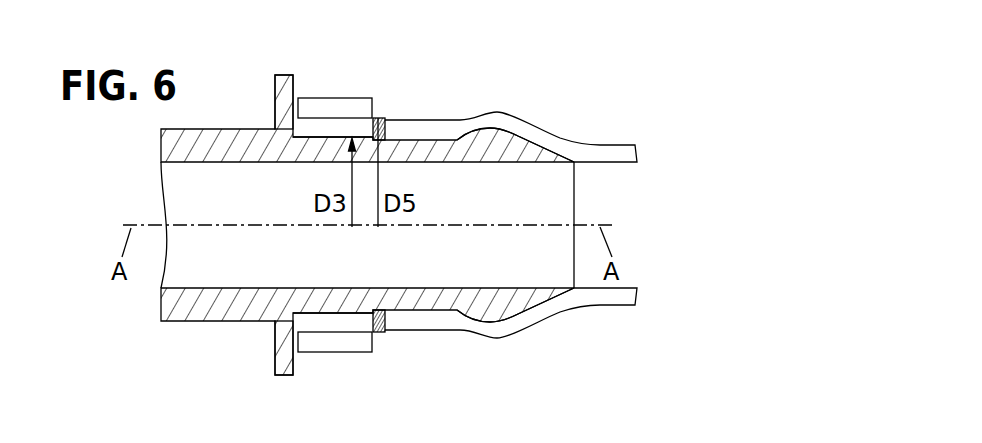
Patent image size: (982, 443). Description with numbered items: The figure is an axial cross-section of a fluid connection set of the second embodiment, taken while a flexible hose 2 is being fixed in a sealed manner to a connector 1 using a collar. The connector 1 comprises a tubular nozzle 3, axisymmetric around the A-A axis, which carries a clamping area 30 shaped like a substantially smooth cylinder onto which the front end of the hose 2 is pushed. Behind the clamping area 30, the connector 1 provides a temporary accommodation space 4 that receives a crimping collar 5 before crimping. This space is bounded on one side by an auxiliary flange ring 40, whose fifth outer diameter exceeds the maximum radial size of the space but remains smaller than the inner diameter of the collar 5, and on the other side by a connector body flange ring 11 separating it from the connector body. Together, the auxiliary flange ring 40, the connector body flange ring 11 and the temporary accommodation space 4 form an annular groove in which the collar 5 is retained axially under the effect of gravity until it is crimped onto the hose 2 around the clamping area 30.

The connector 1 is at (255, 88).
The flexible hose 2 is at (567, 123).
The tubular nozzle 3 is at (466, 174).
The temporary accommodation space 4 is at (330, 150).
The crimping collar 5 is at (343, 108).
The connector body flange ring 11 is at (278, 75).
The clamping area 30 is at (440, 150).
The auxiliary flange ring 40 is at (381, 118).